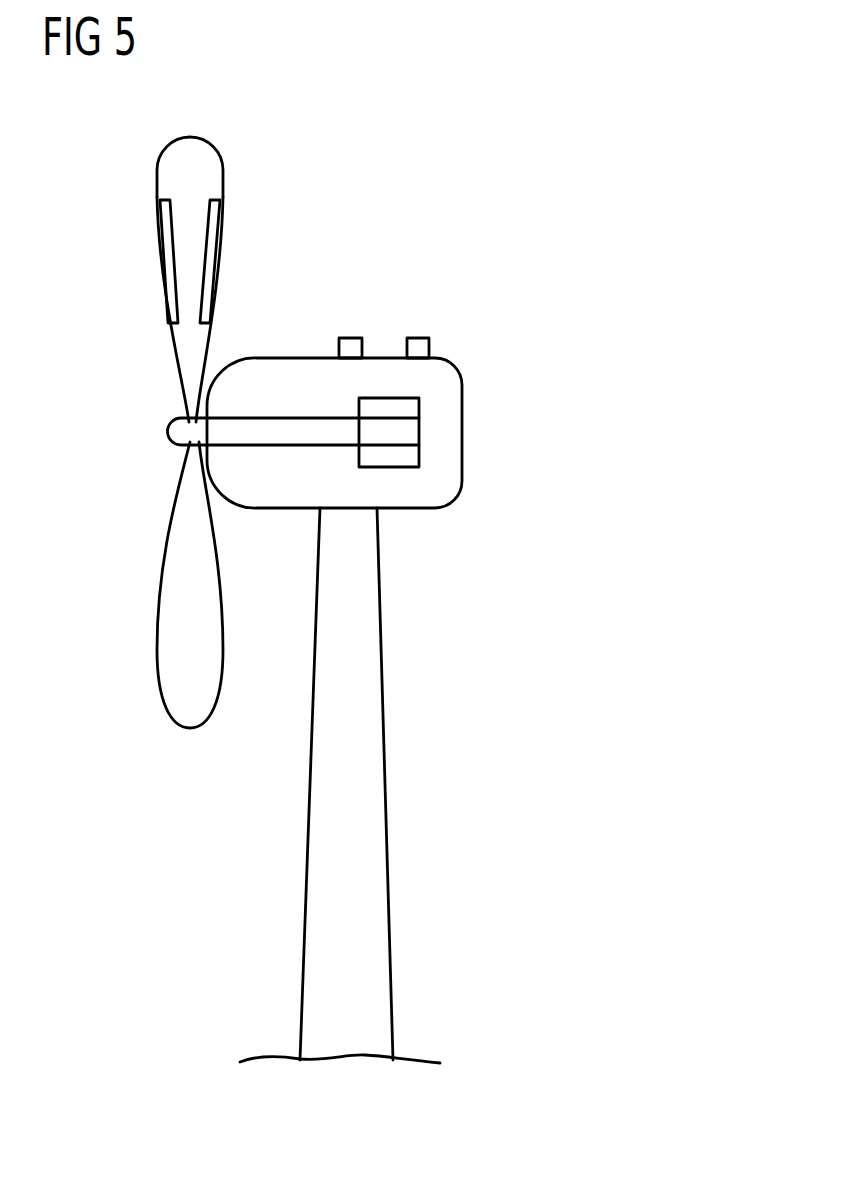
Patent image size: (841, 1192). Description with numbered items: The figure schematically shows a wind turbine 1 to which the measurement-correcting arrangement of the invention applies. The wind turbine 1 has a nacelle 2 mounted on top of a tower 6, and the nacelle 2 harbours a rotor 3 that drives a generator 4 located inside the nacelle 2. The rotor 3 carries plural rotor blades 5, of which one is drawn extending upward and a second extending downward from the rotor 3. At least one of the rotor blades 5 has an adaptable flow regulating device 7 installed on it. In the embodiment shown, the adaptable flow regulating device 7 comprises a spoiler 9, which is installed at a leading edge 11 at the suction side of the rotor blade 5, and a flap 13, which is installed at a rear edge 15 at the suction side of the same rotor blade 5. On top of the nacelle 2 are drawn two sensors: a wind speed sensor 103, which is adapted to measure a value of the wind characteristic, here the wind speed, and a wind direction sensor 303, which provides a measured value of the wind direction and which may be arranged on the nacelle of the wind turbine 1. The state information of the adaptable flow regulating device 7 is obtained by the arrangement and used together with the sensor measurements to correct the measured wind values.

The wind turbine 1 is at (478, 138).
The nacelle 2 is at (288, 357).
The rotor 3 is at (283, 430).
The generator 4 is at (410, 410).
The rotor blade 5 is at (190, 137).
The tower 6 is at (373, 793).
The adaptable flow regulating device 7 is at (100, 205).
The spoiler 9 is at (167, 262).
The leading edge 11 is at (157, 183).
The flap 13 is at (212, 262).
The rear edge 15 is at (224, 183).
The wind speed sensor 103 is at (350, 346).
The wind direction sensor 303 is at (417, 346).